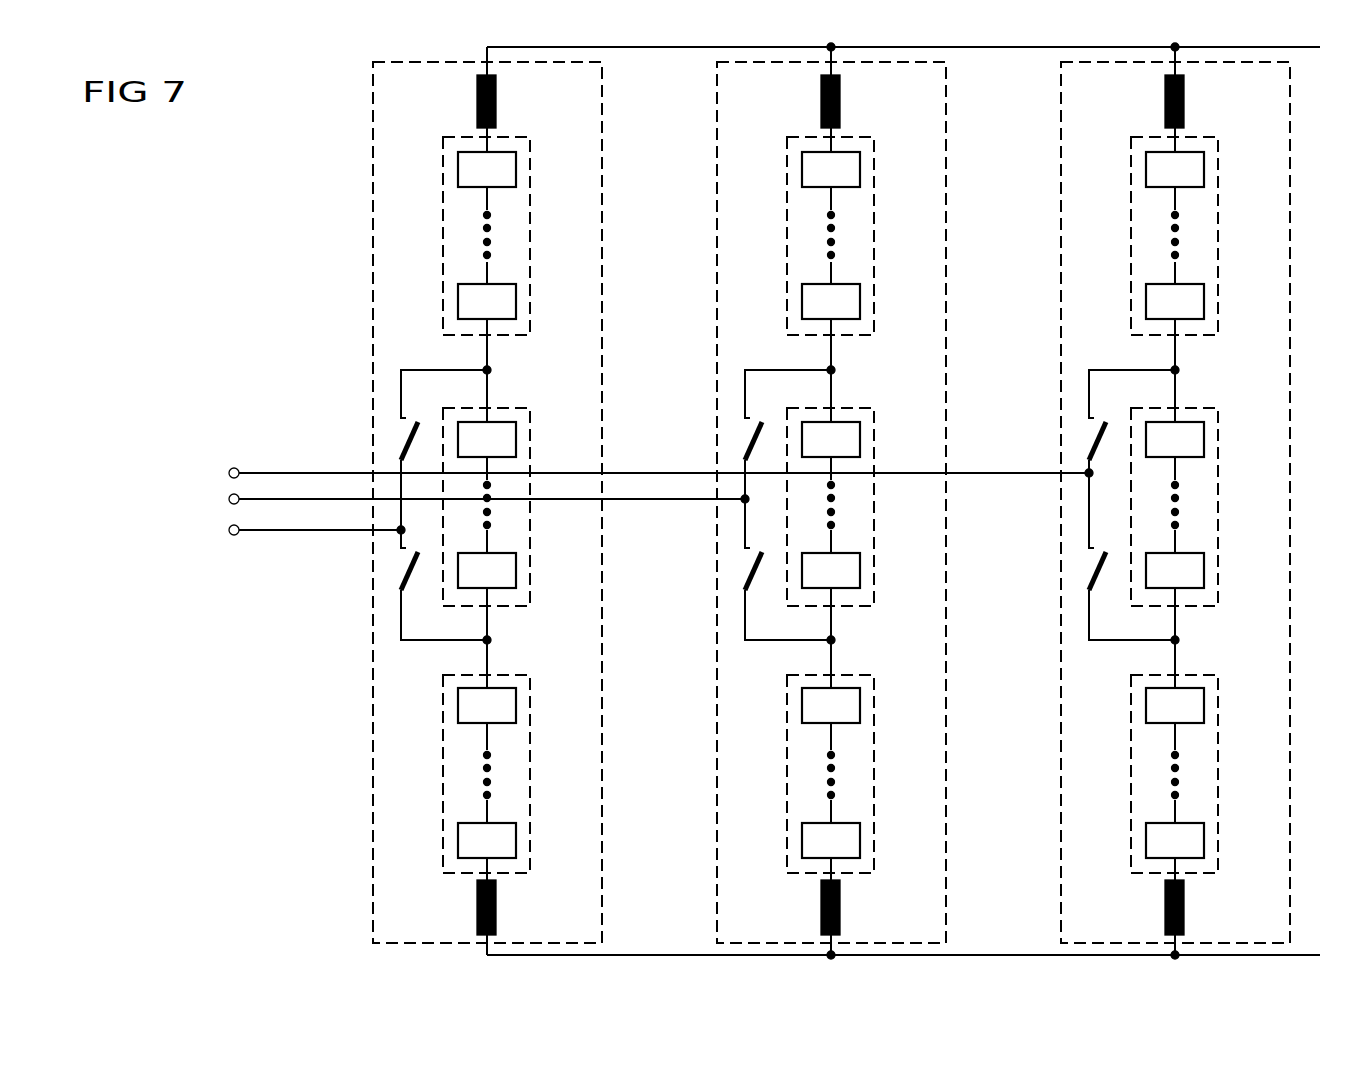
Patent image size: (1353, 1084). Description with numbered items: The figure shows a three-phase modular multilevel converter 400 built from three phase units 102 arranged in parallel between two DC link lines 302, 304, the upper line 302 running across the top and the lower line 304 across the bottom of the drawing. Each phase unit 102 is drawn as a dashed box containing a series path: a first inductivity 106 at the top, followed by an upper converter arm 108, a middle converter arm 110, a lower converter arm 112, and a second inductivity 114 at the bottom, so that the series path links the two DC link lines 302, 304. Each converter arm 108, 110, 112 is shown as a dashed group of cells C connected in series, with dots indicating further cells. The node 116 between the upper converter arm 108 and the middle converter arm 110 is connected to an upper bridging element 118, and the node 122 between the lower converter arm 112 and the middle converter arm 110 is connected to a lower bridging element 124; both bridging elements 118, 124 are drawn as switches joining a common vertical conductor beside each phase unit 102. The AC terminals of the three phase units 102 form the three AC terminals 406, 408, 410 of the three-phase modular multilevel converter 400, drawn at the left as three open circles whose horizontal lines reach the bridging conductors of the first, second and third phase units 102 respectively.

The three-phase modular multilevel converter 400 is at (320, 112).
The phase unit 102 is at (373, 192).
The DC link line 302 is at (960, 50).
The DC link line 304 is at (620, 955).
The first inductivity 106 is at (496, 108).
The second inductivity 114 is at (496, 915).
The upper converter arm 108 is at (530, 235).
The middle converter arm 110 is at (530, 537).
The lower converter arm 112 is at (530, 790).
The node 116 is at (487, 370).
The node 122 is at (487, 640).
The upper bridging element 118 is at (403, 440).
The lower bridging element 124 is at (403, 580).
The AC terminal 406 is at (236, 468).
The AC terminal 408 is at (229, 497).
The AC terminal 410 is at (236, 536).
The battery cell C is at (516, 169).